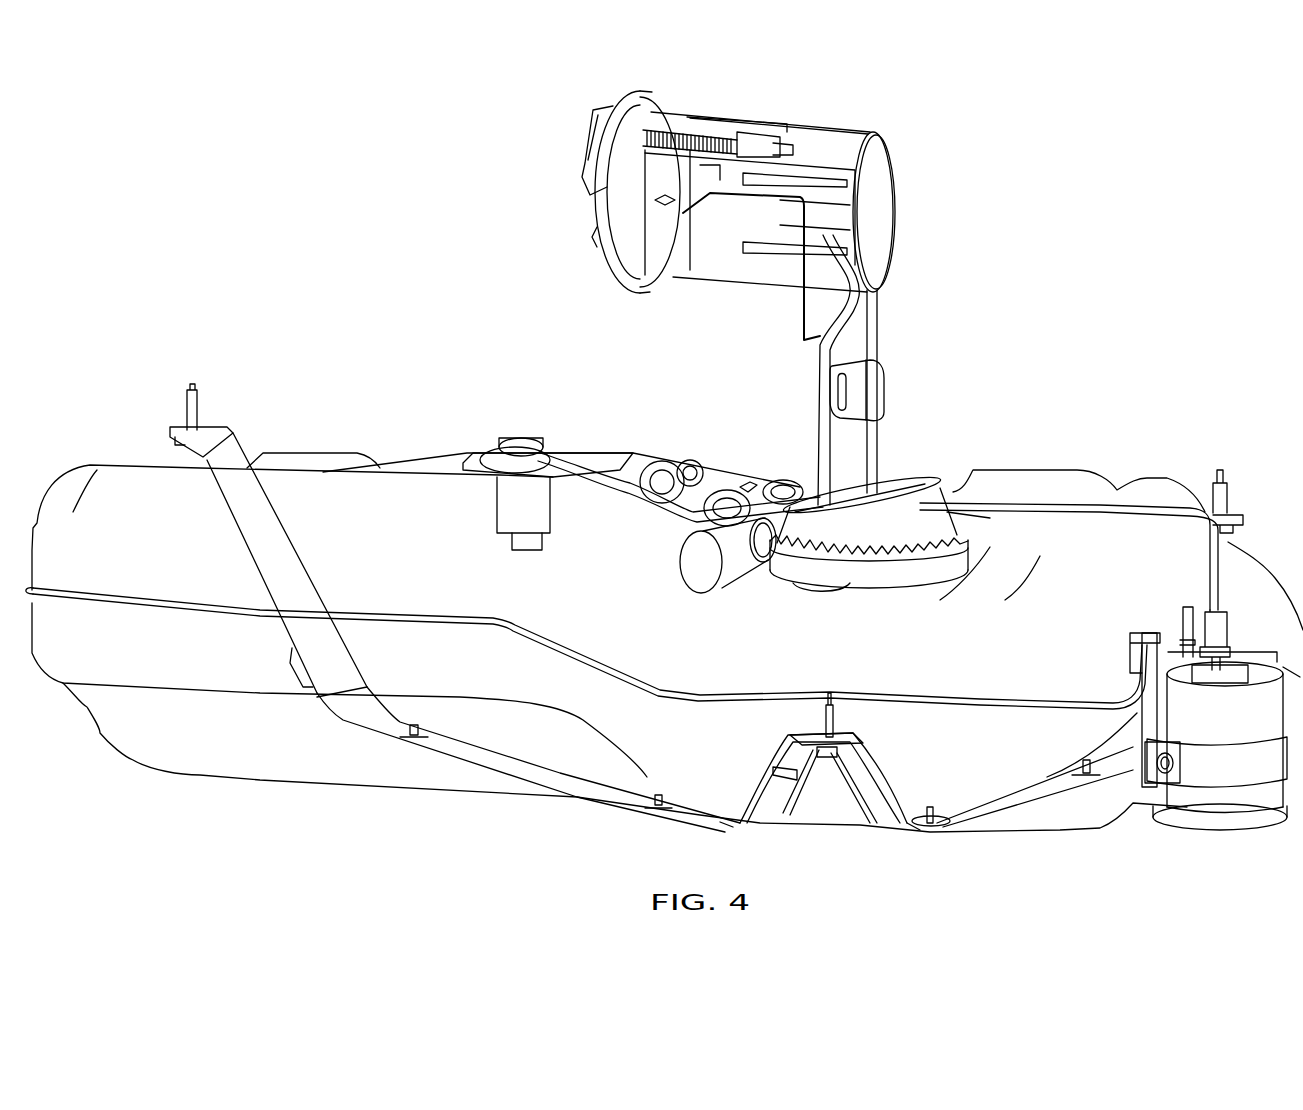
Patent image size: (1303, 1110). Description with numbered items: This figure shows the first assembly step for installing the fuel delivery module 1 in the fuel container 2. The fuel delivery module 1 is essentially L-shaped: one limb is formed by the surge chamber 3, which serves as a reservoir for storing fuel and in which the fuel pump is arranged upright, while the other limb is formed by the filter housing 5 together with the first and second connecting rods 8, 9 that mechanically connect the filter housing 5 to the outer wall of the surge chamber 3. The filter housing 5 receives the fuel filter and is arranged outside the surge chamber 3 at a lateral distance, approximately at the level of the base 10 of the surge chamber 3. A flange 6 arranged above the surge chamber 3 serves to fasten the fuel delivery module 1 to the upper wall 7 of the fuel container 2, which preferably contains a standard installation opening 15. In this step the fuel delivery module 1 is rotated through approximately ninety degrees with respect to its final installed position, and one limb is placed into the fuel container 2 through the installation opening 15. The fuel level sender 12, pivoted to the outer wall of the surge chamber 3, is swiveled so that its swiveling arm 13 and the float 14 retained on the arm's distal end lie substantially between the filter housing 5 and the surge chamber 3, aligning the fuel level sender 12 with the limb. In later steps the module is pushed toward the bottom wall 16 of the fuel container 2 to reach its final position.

The fuel delivery module 1 is at (848, 78).
The fuel container 2 is at (142, 472).
The surge chamber 3 is at (703, 123).
The filter housing 5 is at (933, 478).
The flange 6 is at (597, 240).
The upper wall 7 is at (1040, 556).
The first connecting rod 8 is at (818, 385).
The second connecting rod 9 is at (880, 299).
The base 10 is at (880, 178).
The fuel level sender 12 is at (935, 328).
The swiveling arm 13 is at (793, 339).
The float 14 is at (873, 377).
The installation opening 15 is at (948, 532).
The bottom wall 16 is at (295, 780).